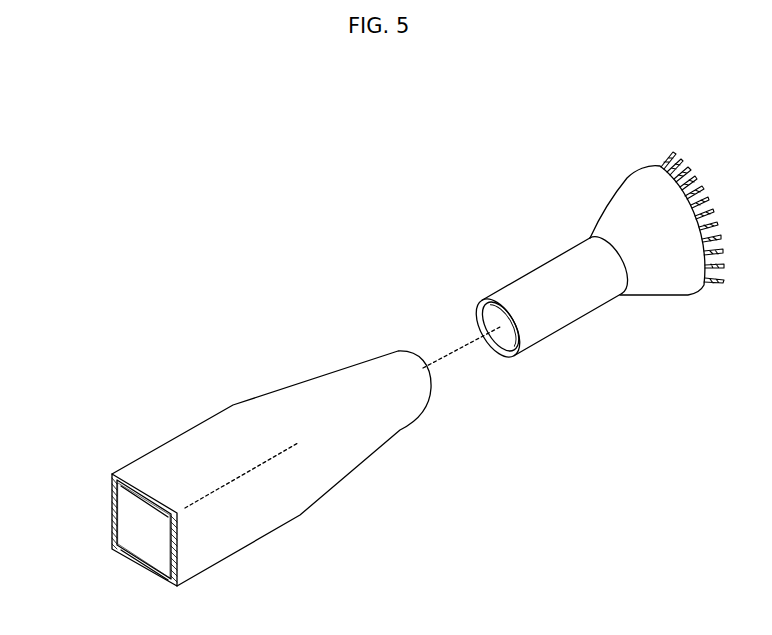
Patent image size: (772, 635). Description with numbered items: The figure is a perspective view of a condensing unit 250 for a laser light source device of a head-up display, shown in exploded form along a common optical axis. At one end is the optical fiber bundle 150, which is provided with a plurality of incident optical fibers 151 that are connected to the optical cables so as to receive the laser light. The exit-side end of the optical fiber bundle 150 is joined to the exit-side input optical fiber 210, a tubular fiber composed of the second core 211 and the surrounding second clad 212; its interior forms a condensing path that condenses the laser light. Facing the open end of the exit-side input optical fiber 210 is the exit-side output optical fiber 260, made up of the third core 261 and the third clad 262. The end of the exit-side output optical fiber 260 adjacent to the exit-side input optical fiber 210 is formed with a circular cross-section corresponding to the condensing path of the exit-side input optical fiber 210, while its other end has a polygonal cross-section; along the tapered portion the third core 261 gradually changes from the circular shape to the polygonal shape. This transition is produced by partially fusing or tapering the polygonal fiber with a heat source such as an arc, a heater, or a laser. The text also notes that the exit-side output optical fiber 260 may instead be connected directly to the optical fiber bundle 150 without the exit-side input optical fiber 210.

The nozzle assembly 250 is at (377, 173).
The exit-side output optical fiber 260 is at (213, 437).
The third core 261 is at (127, 522).
The third clad 262 is at (113, 507).
The exit-side input optical fiber 210 is at (558, 267).
The second core 211 is at (497, 357).
The second clad 212 is at (512, 360).
The optical fiber bundle 150 is at (662, 282).
The incident optical fibers 151 is at (647, 160).